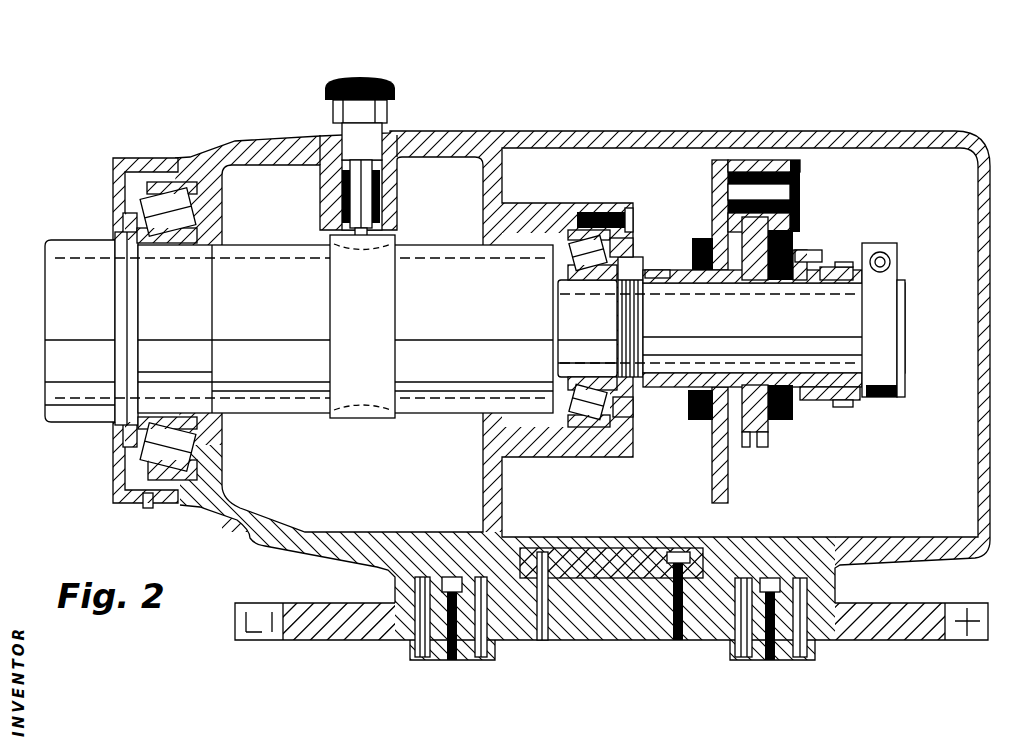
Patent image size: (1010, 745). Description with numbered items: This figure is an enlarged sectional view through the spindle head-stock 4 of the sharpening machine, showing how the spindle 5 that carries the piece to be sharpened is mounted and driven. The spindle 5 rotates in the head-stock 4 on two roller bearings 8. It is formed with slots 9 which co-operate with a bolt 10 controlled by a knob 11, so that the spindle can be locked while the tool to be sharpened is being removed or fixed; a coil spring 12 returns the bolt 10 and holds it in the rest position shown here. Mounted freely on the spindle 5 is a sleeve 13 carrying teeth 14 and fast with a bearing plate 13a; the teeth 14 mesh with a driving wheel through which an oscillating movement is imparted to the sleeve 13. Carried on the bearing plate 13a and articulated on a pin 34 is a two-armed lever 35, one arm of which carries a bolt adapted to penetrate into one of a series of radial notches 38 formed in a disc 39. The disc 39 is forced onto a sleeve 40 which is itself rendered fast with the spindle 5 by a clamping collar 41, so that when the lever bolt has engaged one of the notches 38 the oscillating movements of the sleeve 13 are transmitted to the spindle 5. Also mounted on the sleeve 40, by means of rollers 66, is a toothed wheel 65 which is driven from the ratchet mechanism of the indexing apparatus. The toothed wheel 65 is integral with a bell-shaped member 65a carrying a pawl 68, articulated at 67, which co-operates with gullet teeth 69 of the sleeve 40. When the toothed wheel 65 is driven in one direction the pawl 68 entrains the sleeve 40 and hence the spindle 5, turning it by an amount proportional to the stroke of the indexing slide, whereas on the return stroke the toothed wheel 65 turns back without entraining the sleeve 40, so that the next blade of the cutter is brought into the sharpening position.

The spindle head-stock 4 is at (505, 372).
The spindle 5 is at (364, 327).
The roller bearings 8 is at (385, 331).
The slots 9 is at (376, 346).
The bolt 10 is at (386, 200).
The knob 11 is at (367, 106).
The coil spring 12 is at (337, 182).
The sleeve 13 is at (732, 328).
The bearing plate 13a is at (686, 331).
The teeth 14 is at (657, 260).
The pin 34 is at (728, 207).
The two-armed lever 35 is at (733, 191).
The radial notches 38 is at (766, 456).
The disc 39 is at (762, 271).
The sleeve 40 is at (752, 328).
The clamping collar 41 is at (903, 320).
The toothed wheel 65 is at (839, 414).
The bell-shaped member 65a is at (789, 287).
The rollers 66 is at (835, 296).
The pawl articulation 67 is at (845, 242).
The pawl 68 is at (816, 241).
The gullet teeth 69 is at (787, 416).